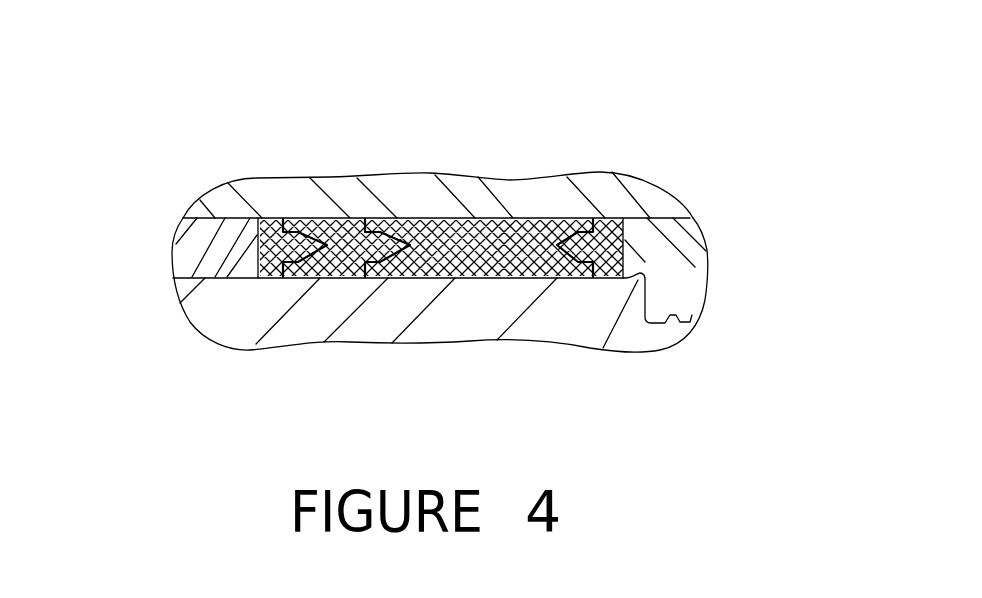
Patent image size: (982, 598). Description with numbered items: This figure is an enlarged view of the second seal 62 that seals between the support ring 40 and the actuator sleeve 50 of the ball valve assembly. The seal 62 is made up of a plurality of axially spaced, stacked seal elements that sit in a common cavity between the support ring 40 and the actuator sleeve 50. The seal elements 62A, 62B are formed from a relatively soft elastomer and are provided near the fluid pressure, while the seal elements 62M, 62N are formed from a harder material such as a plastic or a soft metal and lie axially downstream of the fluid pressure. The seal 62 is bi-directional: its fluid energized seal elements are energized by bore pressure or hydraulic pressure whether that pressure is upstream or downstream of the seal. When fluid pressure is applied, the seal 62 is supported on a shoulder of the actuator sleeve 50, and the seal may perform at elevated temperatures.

The support ring 40 is at (265, 207).
The actuator sleeve 50 is at (218, 305).
The second seal 62 is at (505, 218).
The seal element 62A is at (348, 220).
The seal element 62B is at (443, 218).
The seal element 62N is at (493, 280).
The seal element 62M is at (540, 222).